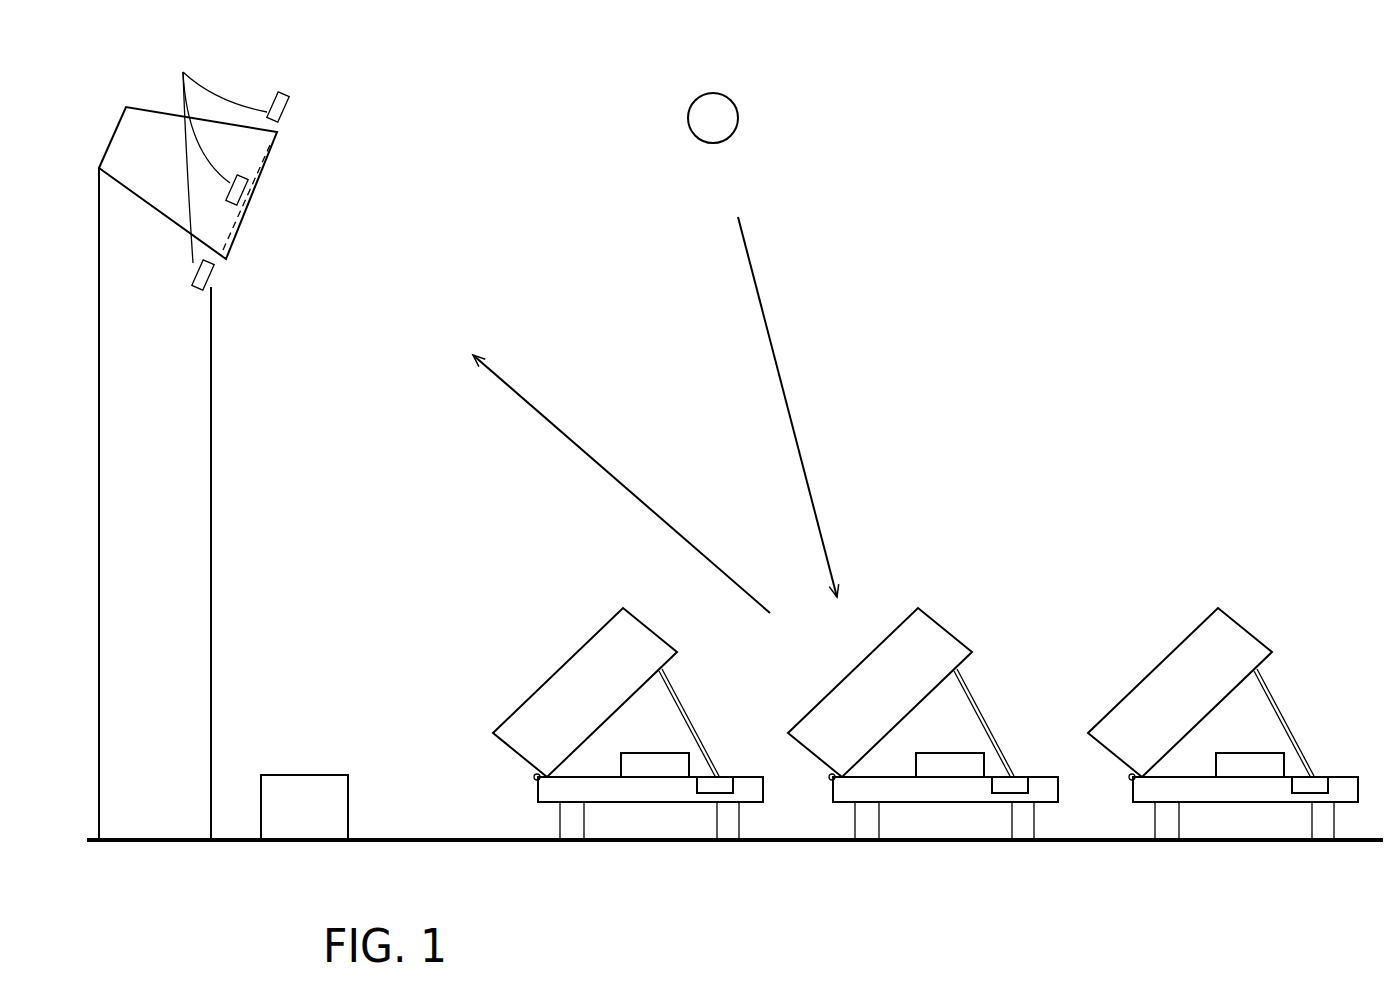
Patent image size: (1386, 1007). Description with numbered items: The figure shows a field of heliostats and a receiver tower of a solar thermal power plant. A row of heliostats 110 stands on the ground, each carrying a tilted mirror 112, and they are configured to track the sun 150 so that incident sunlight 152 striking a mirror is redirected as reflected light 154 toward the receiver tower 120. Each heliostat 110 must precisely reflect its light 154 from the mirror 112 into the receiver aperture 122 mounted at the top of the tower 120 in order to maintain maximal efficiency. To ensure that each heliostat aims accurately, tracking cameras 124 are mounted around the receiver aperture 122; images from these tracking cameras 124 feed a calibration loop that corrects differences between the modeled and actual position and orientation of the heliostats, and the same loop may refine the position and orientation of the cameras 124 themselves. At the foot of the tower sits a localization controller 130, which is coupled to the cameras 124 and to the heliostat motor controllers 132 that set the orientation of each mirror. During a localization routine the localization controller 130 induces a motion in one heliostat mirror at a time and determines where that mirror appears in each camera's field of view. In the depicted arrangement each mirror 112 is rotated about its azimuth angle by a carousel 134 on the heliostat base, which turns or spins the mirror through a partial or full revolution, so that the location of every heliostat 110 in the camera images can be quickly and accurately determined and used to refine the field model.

The heliostat 110 is at (1218, 610).
The mirror 112 is at (563, 706).
The receiver tower 120 is at (196, 542).
The receiver aperture 122 is at (268, 168).
The tracking cameras 124 is at (222, 166).
The localization controller 130 is at (286, 821).
The heliostat motor controllers 132 is at (952, 765).
The carousel 134 is at (948, 808).
The sun 150 is at (733, 120).
The sunlight 152 is at (788, 407).
The reflected light 154 is at (621, 484).